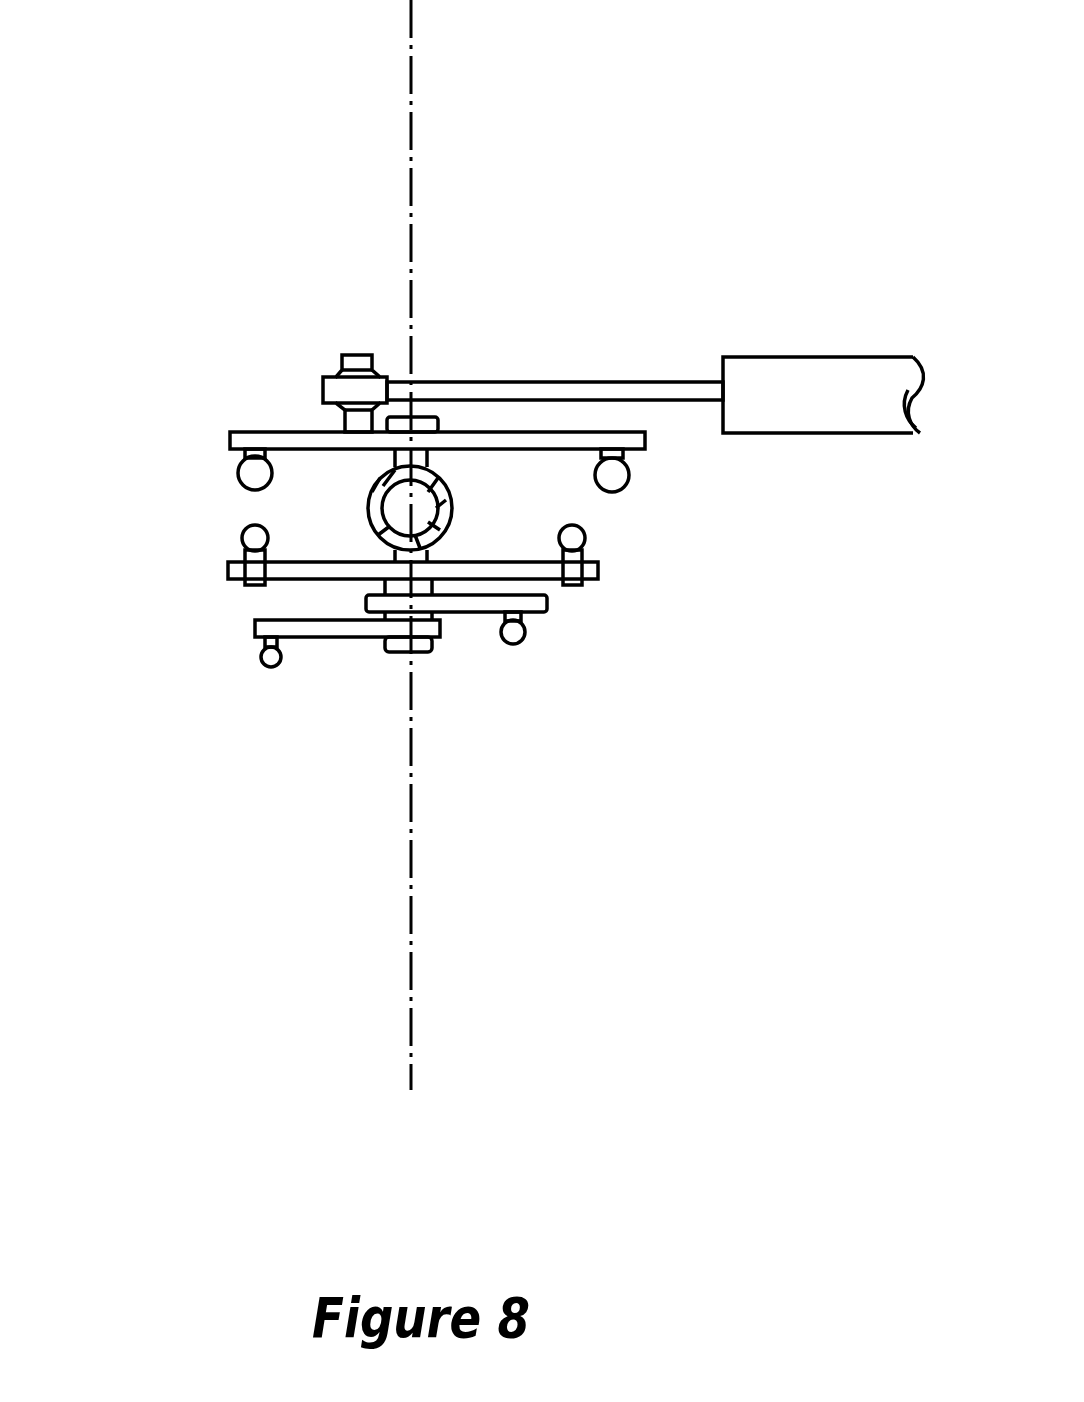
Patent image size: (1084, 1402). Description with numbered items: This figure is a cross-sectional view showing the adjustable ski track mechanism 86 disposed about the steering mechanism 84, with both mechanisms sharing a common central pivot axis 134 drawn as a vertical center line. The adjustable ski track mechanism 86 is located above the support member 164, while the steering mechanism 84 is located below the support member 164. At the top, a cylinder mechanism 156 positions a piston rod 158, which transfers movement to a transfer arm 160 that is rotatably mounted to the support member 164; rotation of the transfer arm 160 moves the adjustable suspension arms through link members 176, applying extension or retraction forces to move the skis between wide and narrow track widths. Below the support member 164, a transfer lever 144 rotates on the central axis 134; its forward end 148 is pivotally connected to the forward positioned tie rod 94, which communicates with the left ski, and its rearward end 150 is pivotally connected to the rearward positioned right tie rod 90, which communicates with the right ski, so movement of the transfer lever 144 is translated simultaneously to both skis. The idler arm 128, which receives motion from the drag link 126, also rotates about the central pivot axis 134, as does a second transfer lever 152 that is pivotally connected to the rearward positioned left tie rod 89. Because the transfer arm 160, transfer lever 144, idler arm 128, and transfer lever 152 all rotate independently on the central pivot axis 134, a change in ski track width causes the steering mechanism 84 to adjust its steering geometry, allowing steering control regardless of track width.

The steering mechanism 84 is at (466, 690).
The adjustable ski track mechanism 86 is at (355, 320).
The left tie rod 89 is at (262, 657).
The right tie rod 90 is at (585, 540).
The forward positioned tie rod 94 is at (242, 537).
The drag link 126 is at (517, 647).
The idler arm 128 is at (550, 612).
The central pivot axis 134 is at (412, 225).
The transfer lever 144 is at (342, 548).
The forward end 148 is at (228, 572).
The rearward end 150 is at (600, 583).
The transfer lever 152 is at (335, 638).
The cylinder mechanism 156 is at (818, 357).
The piston rod 158 is at (583, 382).
The transfer arm 160 is at (288, 431).
The support member 164 is at (452, 513).
The link members 176 is at (238, 473).